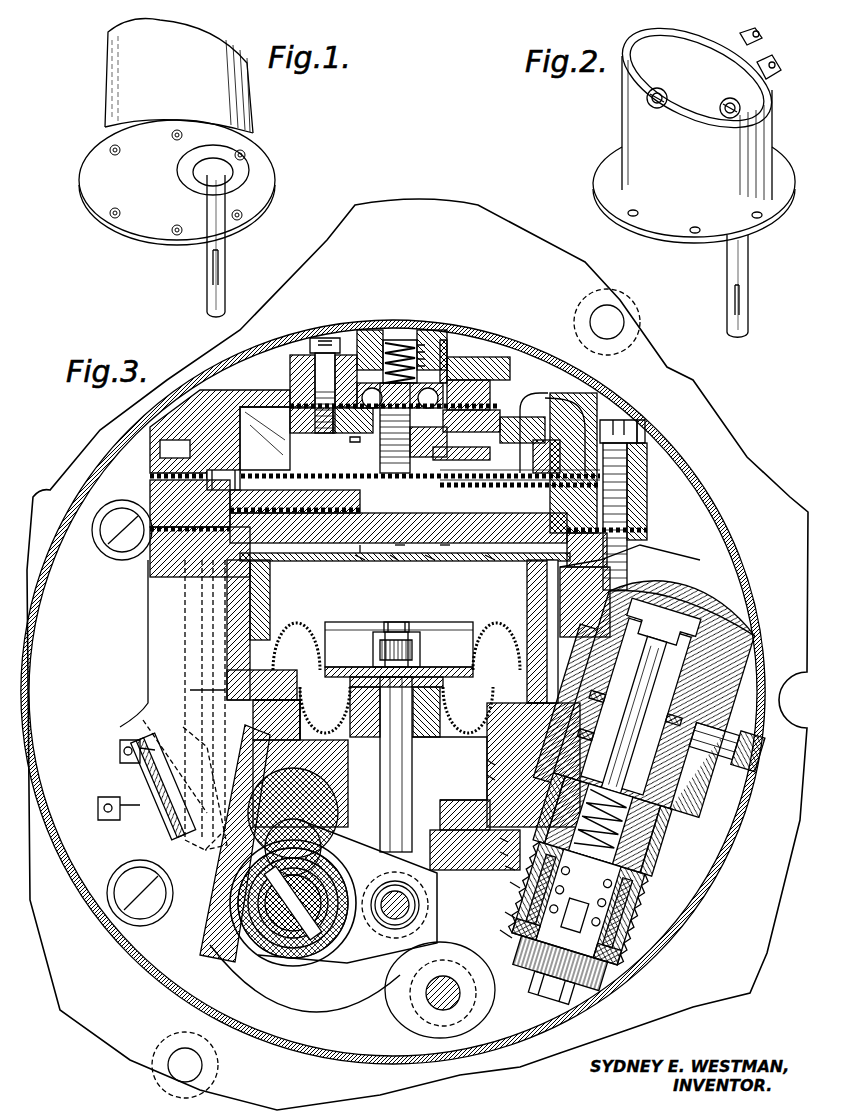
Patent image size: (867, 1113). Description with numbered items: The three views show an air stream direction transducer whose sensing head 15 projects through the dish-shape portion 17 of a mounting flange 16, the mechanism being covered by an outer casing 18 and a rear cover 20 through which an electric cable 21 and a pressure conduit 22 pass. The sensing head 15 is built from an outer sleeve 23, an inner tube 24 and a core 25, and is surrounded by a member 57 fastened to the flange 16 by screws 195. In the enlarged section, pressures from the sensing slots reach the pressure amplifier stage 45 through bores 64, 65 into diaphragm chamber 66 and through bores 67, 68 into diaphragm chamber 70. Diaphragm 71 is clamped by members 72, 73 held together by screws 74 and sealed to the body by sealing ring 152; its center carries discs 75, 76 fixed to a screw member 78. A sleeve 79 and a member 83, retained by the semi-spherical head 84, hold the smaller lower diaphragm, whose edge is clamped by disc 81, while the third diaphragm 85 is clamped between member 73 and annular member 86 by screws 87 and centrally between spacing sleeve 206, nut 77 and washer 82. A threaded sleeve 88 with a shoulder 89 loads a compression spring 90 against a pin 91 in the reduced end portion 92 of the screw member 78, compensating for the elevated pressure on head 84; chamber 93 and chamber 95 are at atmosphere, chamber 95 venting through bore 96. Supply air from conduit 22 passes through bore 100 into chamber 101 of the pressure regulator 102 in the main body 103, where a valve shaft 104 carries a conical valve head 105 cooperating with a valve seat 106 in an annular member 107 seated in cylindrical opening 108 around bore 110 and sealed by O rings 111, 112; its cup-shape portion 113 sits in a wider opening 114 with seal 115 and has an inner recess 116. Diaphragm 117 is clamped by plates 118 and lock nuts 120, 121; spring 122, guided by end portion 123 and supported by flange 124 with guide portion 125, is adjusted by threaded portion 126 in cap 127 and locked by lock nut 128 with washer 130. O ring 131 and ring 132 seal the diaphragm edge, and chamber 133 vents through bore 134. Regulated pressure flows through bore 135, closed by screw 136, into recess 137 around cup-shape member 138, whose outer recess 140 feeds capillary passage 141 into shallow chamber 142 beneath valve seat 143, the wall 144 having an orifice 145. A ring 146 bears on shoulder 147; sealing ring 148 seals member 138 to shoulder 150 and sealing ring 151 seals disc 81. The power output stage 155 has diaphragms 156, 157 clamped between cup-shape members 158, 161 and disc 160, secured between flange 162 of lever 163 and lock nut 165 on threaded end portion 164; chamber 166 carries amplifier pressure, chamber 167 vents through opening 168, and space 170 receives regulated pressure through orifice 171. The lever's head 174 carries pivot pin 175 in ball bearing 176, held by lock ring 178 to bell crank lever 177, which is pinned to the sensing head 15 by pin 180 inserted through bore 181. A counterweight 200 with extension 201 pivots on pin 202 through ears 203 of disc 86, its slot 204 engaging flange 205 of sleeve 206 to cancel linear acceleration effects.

In FIG. 1, the sensing head 15 is at (203, 256).
In FIG. 2, the sensing head 15 is at (735, 260).
In FIG. 1, the flange 16 is at (262, 150).
In FIG. 2, the flange 16 is at (766, 229).
In FIG. 3, the flange 16 is at (700, 410).
In FIG. 1, the dish-shape portion 17 is at (237, 180).
In FIG. 1, the outer casing 18 is at (232, 109).
In FIG. 2, the outer casing 18 is at (624, 103).
In FIG. 3, the outer casing 18 is at (706, 494).
In FIG. 2, the rear cover 20 is at (645, 64).
In FIG. 2, the electric cable 21 is at (757, 42).
In FIG. 2, the conduit 22 is at (780, 66).
In FIG. 3, the outer sleeve 23 is at (240, 940).
In FIG. 3, the inner tube 24 is at (298, 1008).
In FIG. 3, the core 25 is at (300, 950).
In FIG. 3, the pressure amplifier stage 45 is at (263, 412).
In FIG. 3, the member 57 is at (210, 935).
In FIG. 3, the bore 64 is at (210, 686).
In FIG. 3, the bore 65 is at (190, 540).
In FIG. 3, the diaphragm chamber 66 is at (647, 483).
In FIG. 3, the bore 67 is at (185, 640).
In FIG. 3, the bore 68 is at (250, 392).
In FIG. 3, the diaphragm chamber 70 is at (557, 395).
In FIG. 3, the diaphragm 71 is at (605, 425).
In FIG. 3, the member 72 is at (646, 505).
In FIG. 3, the member 73 is at (645, 447).
In FIG. 3, the screws 74 is at (616, 424).
In FIG. 3, the disc 75 is at (398, 516).
In FIG. 3, the disc 76 is at (545, 462).
In FIG. 3, the nut 77 is at (440, 394).
In FIG. 3, the screw member 78 is at (380, 455).
In FIG. 3, the sleeve 79 is at (295, 497).
In FIG. 3, the disc 81 is at (569, 548).
In FIG. 3, the washer 82 is at (345, 430).
In FIG. 3, the member 83 is at (430, 561).
In FIG. 3, the semi-spherical head 84 is at (358, 571).
In FIG. 3, the third diaphragm 85 is at (458, 368).
In FIG. 3, the annular member 86 is at (298, 418).
In FIG. 3, the screws 87 is at (328, 338).
In FIG. 3, the threaded sleeve 88 is at (403, 332).
In FIG. 3, the shoulder 89 is at (430, 333).
In FIG. 3, the compression spring 90 is at (447, 345).
In FIG. 3, the pin 91 is at (458, 348).
In FIG. 3, the end portion 92 is at (407, 335).
In FIG. 3, the chamber 93 is at (372, 333).
In FIG. 3, the chamber 95 is at (360, 561).
In FIG. 3, the bore 96 is at (490, 561).
In FIG. 3, the bore 100 is at (690, 565).
In FIG. 3, the chamber 101 is at (722, 605).
In FIG. 3, the pressure regulator 102 is at (718, 650).
In FIG. 3, the main body 103 is at (742, 770).
In FIG. 3, the valve shaft 104 is at (660, 680).
In FIG. 3, the conical valve head 105 is at (700, 600).
In FIG. 3, the valve seat 106 is at (690, 628).
In FIG. 3, the annular member 107 is at (702, 800).
In FIG. 3, the cylindrical opening 108 is at (612, 625).
In FIG. 3, the bore 110 is at (655, 748).
In FIG. 3, the O ring 111 is at (620, 640).
In FIG. 3, the O ring 112 is at (592, 700).
In FIG. 3, the cup-shape portion 113 is at (692, 850).
In FIG. 3, the cylindrical opening 114 is at (548, 728).
In FIG. 3, the annular seal 115 is at (670, 770).
In FIG. 3, the inner recess 116 is at (702, 830).
In FIG. 3, the diaphragm 117 is at (672, 880).
In FIG. 3, the clamping plates 118 is at (682, 866).
In FIG. 3, the lock nut 120 is at (483, 790).
In FIG. 3, the lock nut 121 is at (622, 850).
In FIG. 3, the spring 122 is at (617, 875).
In FIG. 3, the enlarged end portion 123 is at (510, 870).
In FIG. 3, the flange 124 is at (515, 885).
In FIG. 3, the central guide portion 125 is at (600, 950).
In FIG. 3, the threaded portion 126 is at (596, 972).
In FIG. 3, the threaded cap 127 is at (500, 855).
In FIG. 3, the lock nut 128 is at (548, 1002).
In FIG. 3, the washer 130 is at (510, 915).
In FIG. 3, the O ring 131 is at (495, 765).
In FIG. 3, the ring 132 is at (495, 780).
In FIG. 3, the chamber 133 is at (505, 840).
In FIG. 3, the bore 134 is at (622, 930).
In FIG. 3, the bore 135 is at (700, 700).
In FIG. 3, the screw 136 is at (740, 738).
In FIG. 3, the recess 137 is at (562, 585).
In FIG. 3, the cup-shape member 138 is at (527, 600).
In FIG. 3, the annular outer recess 140 is at (255, 578).
In FIG. 3, the capillary passage 141 is at (527, 581).
In FIG. 3, the shallow chamber 142 is at (448, 572).
In FIG. 3, the valve seat 143 is at (400, 572).
In FIG. 3, the wall 144 is at (268, 601).
In FIG. 3, the orifice 145 is at (395, 561).
In FIG. 3, the ring 146 is at (334, 740).
In FIG. 3, the shoulder 147 is at (344, 710).
In FIG. 3, the sealing ring 148 is at (200, 571).
In FIG. 3, the shoulder 150 is at (570, 565).
In FIG. 3, the sealing ring 151 is at (150, 576).
In FIG. 3, the sealing ring 152 is at (152, 483).
In FIG. 3, the power output stage 155 is at (377, 652).
In FIG. 3, the diaphragm 156 is at (478, 625).
In FIG. 3, the diaphragm 157 is at (458, 712).
In FIG. 3, the cup-shape member 158 is at (333, 626).
In FIG. 3, the circular disc 160 is at (478, 646).
In FIG. 3, the cup-shape member 161 is at (358, 740).
In FIG. 3, the flange 162 is at (426, 738).
In FIG. 3, the lever 163 is at (383, 835).
In FIG. 3, the threaded end portion 164 is at (419, 650).
In FIG. 3, the lock nut 165 is at (412, 633).
In FIG. 3, the chamber 166 is at (237, 600).
In FIG. 3, the chamber 167 is at (314, 782).
In FIG. 3, the opening 168 is at (330, 796).
In FIG. 3, the space 170 is at (296, 646).
In FIG. 3, the orifice 171 is at (530, 668).
In FIG. 3, the head 174 is at (435, 856).
In FIG. 3, the pivot pin 175 is at (388, 950).
In FIG. 3, the ball bearing 176 is at (420, 995).
In FIG. 3, the bell crank lever 177 is at (415, 960).
In FIG. 3, the lock ring 178 is at (505, 935).
In FIG. 3, the pin 180 is at (452, 488).
In FIG. 3, the bore 181 is at (292, 735).
In FIG. 3, the screws 195 is at (100, 530).
In FIG. 3, the counterweight 200 is at (577, 400).
In FIG. 3, the extension 201 is at (480, 455).
In FIG. 3, the pin 202 is at (518, 411).
In FIG. 3, the ears 203 is at (507, 488).
In FIG. 3, the slot 204 is at (432, 450).
In FIG. 3, the flange 205 is at (355, 438).
In FIG. 3, the spacing sleeve 206 is at (470, 410).